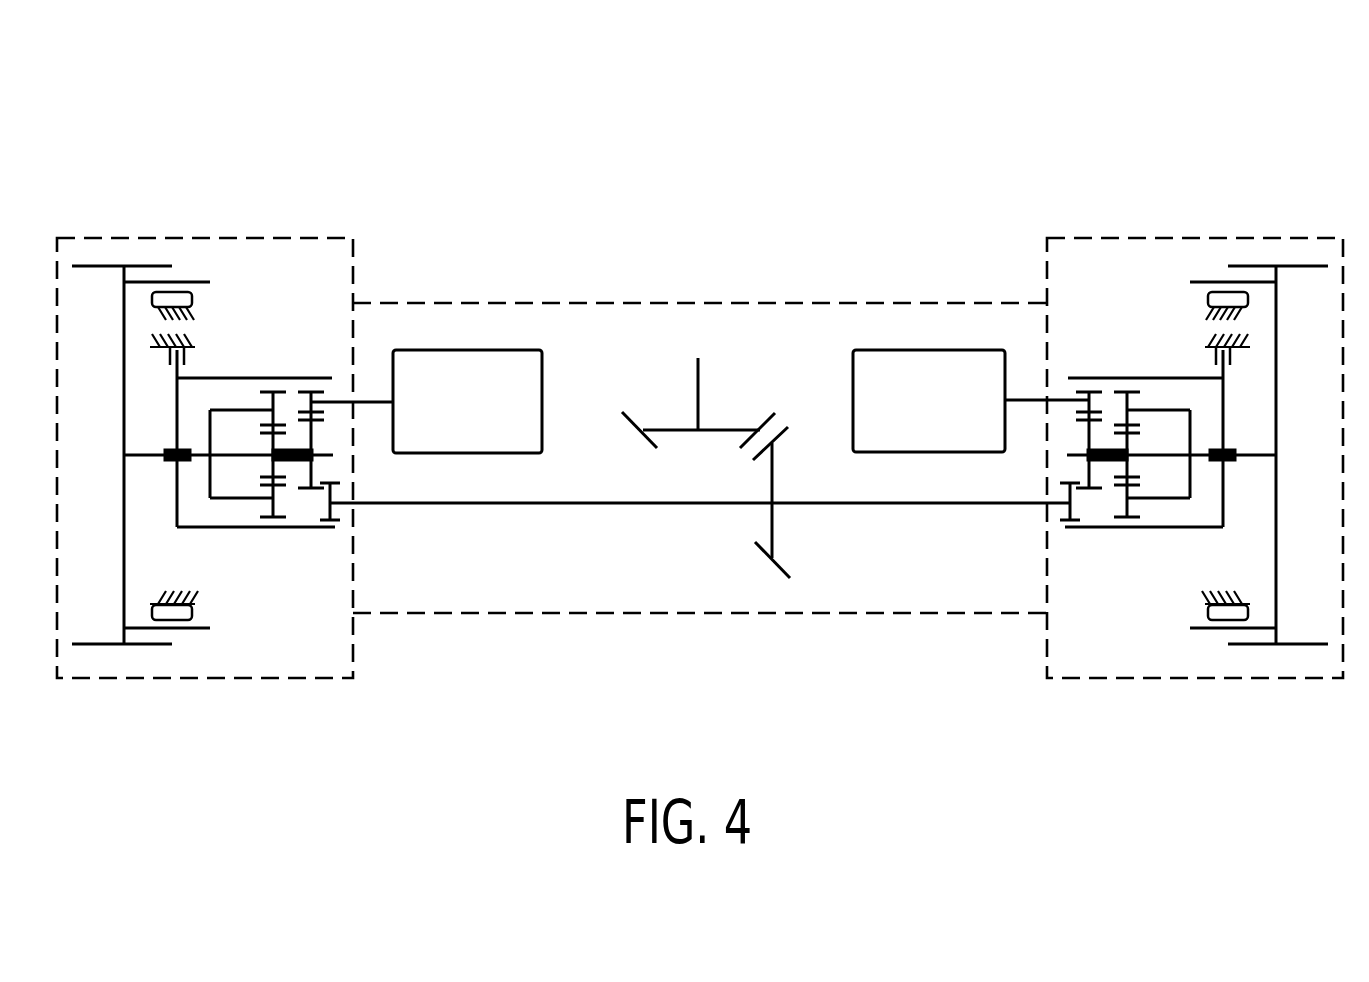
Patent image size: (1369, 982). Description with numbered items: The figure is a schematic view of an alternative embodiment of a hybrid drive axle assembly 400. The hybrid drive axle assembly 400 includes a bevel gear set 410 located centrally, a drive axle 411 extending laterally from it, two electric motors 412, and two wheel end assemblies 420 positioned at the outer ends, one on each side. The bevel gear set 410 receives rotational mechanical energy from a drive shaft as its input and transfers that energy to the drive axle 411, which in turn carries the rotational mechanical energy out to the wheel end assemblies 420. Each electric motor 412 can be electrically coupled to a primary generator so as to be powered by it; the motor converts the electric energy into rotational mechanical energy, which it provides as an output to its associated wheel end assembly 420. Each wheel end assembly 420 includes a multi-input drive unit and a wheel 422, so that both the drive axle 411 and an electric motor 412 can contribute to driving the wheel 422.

The hybrid drive axle assembly 400 is at (1140, 86).
The bevel gear set 410 is at (773, 418).
The drive axle 411 is at (887, 503).
The electric motor 412 is at (467, 350).
The wheel end assembly 420 is at (205, 238).
The wheel 422 is at (1303, 644).